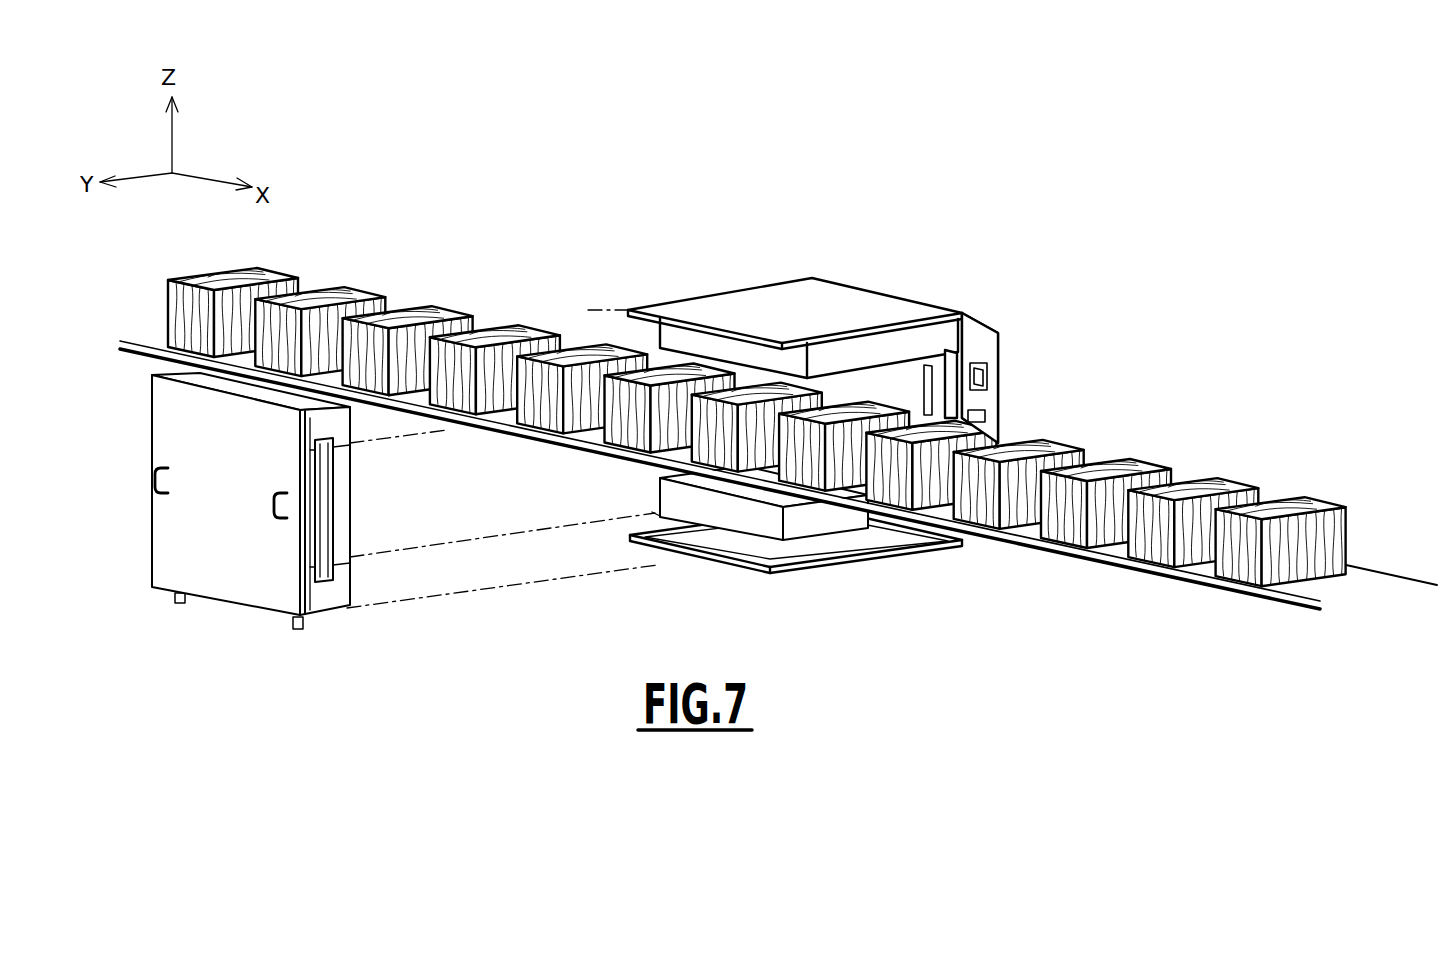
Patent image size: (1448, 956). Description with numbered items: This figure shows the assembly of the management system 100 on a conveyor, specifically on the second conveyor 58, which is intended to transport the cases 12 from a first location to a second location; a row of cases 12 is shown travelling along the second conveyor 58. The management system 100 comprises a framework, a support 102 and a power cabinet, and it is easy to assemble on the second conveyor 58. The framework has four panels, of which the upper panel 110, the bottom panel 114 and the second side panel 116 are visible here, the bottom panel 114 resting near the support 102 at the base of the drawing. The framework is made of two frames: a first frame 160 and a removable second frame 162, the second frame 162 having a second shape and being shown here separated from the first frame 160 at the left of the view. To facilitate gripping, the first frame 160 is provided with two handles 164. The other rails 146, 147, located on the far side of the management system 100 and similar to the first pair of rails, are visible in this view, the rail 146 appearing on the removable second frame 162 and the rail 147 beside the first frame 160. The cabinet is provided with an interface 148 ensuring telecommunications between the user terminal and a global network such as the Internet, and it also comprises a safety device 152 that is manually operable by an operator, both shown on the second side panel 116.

The management system 100 is at (722, 263).
The upper panel 110 is at (848, 302).
The first frame 160 is at (999, 329).
The rail 147 is at (962, 355).
The interface 148 is at (1000, 368).
The second side panel 116 is at (235, 588).
The safety device 152 is at (987, 418).
The case 12 is at (1303, 497).
The second conveyor 58 is at (1377, 585).
The second frame 162 is at (242, 501).
The handle 164 is at (152, 480).
The rail 146 is at (333, 487).
The support 102 is at (792, 573).
The bottom panel 114 is at (822, 522).